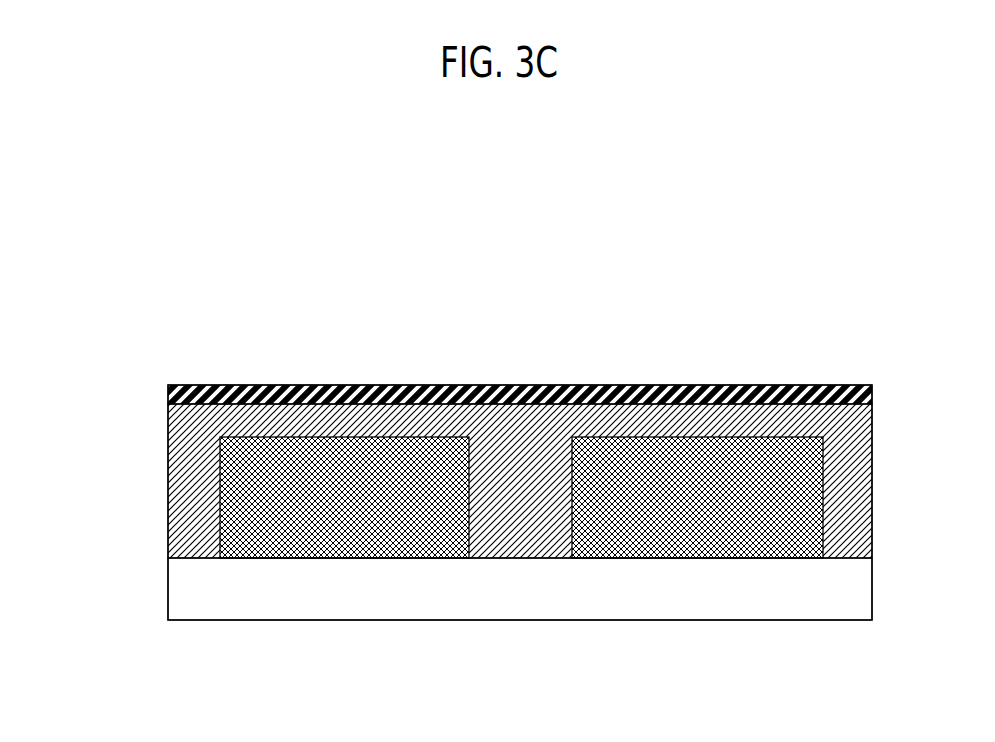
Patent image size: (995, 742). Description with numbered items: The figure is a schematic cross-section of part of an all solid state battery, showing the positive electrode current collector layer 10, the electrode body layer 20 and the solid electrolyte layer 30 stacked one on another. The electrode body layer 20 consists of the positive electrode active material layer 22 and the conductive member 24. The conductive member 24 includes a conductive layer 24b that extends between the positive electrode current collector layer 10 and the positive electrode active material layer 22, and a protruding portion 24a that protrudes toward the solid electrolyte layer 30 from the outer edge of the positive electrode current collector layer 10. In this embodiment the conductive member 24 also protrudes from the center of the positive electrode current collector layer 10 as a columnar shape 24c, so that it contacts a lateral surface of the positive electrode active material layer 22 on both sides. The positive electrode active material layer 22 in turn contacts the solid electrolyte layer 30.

The positive electrode current collector layer 10 is at (168, 388).
The electrode body layer 20 is at (405, 190).
The positive electrode active material layer 22 is at (318, 498).
The conductive member 24 is at (560, 449).
The protruding portion 24a is at (880, 437).
The conductive layer 24b is at (880, 405).
The columnar shape 24c is at (528, 540).
The solid electrolyte layer 30 is at (192, 588).